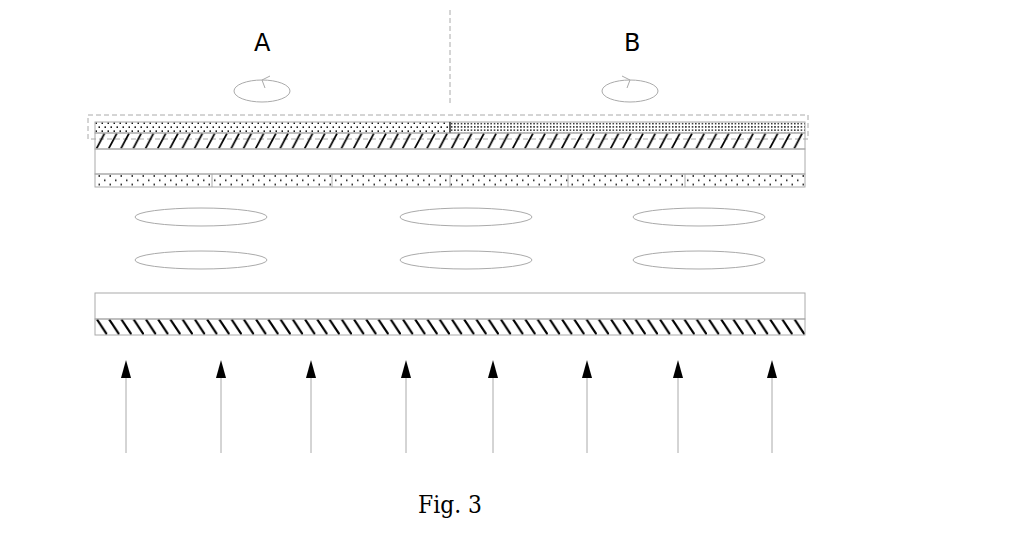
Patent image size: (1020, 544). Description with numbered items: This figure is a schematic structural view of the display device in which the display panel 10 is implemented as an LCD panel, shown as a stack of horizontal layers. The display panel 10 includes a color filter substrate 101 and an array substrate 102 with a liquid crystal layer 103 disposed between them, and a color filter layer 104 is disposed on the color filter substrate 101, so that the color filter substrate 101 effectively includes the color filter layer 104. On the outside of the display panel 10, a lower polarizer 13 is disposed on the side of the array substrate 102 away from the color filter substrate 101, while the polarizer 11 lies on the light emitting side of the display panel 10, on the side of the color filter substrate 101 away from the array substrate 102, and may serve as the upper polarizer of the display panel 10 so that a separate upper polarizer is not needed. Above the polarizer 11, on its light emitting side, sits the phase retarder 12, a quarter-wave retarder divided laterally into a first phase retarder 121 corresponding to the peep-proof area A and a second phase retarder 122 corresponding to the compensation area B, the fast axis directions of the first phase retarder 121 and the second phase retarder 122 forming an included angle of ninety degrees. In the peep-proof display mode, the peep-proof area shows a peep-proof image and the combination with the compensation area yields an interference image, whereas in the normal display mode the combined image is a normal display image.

The display panel 10 is at (460, 226).
The polarizer 11 is at (805, 143).
The phase retarder 12 is at (479, 110).
The lower polarizer 13 is at (805, 322).
The color filter substrate 101 is at (790, 168).
The array substrate 102 is at (795, 308).
The liquid crystal layer 103 is at (793, 237).
The color filter layer 104 is at (805, 180).
The first phase retarder 121 is at (318, 128).
The second phase retarder 122 is at (677, 128).